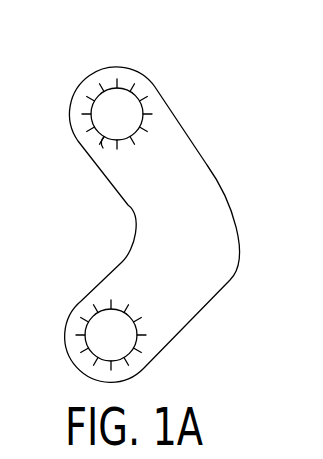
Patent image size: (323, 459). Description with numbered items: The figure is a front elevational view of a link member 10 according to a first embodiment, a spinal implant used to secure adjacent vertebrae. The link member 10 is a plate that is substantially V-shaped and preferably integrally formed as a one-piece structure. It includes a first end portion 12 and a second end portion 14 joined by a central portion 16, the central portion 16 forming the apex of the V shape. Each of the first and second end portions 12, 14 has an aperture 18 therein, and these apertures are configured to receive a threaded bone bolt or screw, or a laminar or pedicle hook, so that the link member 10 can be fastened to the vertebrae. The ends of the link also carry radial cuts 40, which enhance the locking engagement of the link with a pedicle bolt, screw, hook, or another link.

The link member 10 is at (155, 204).
The first end portion 12 is at (88, 78).
The second end portion 14 is at (150, 352).
The central portion 16 is at (222, 242).
The aperture 18 is at (112, 120).
The radial cuts 40 is at (103, 148).